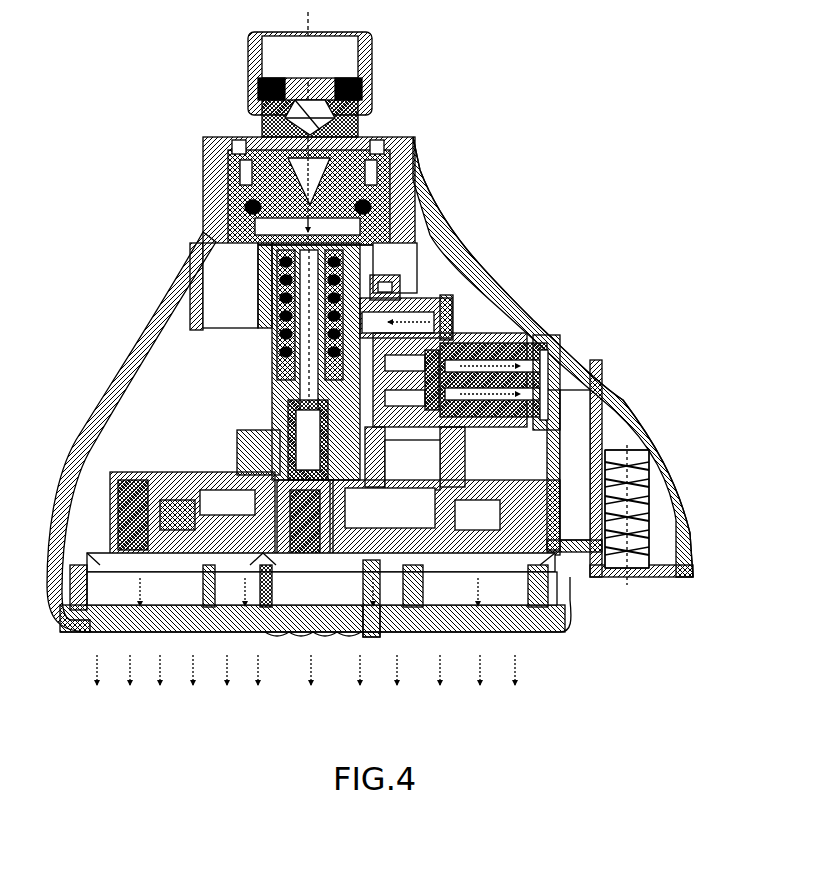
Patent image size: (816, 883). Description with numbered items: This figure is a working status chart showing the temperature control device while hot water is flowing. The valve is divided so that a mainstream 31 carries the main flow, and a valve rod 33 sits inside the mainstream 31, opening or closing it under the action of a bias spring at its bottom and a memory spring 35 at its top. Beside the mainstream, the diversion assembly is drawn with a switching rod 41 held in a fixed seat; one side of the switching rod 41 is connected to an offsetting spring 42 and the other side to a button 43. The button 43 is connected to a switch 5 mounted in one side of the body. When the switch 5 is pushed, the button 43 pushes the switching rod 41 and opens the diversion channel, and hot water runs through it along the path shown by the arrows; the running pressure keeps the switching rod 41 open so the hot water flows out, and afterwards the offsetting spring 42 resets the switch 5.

The switch 5 is at (653, 577).
The mainstream 31 is at (260, 340).
The valve rod 33 is at (187, 232).
The memory spring 35 is at (430, 183).
The switching rod 41 is at (490, 333).
The offsetting spring 42 is at (455, 313).
The button 43 is at (550, 353).